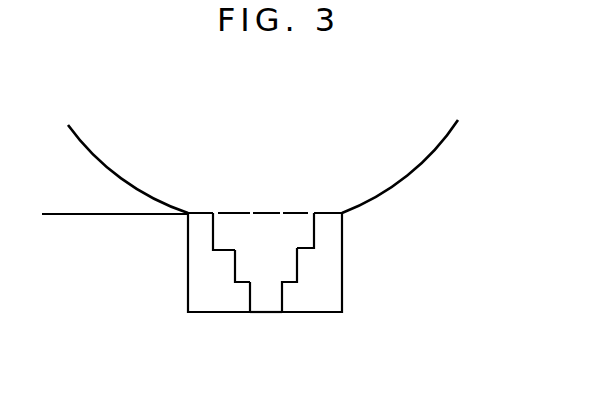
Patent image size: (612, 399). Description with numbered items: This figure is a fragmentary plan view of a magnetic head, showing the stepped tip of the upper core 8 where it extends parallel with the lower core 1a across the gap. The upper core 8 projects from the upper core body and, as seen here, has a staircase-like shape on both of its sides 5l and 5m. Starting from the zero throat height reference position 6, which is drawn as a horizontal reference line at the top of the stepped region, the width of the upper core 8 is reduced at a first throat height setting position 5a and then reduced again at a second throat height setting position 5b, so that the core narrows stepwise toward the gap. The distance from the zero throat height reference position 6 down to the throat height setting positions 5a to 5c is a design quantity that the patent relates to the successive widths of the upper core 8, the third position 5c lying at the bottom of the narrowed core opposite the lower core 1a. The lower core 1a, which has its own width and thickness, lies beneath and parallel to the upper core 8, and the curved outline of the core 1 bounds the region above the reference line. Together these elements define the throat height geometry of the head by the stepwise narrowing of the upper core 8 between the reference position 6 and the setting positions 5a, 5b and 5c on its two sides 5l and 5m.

The lower core 1 is at (427, 135).
The lower core 1a is at (322, 298).
The zero throat height reference position 6 is at (57, 213).
The upper core 8 is at (297, 235).
The first throat height setting position 5a is at (223, 252).
The side of upper core 5m is at (235, 268).
The second throat height setting position 5b is at (243, 284).
The throat height setting position 5c is at (266, 313).
The side of upper core 5l is at (300, 268).